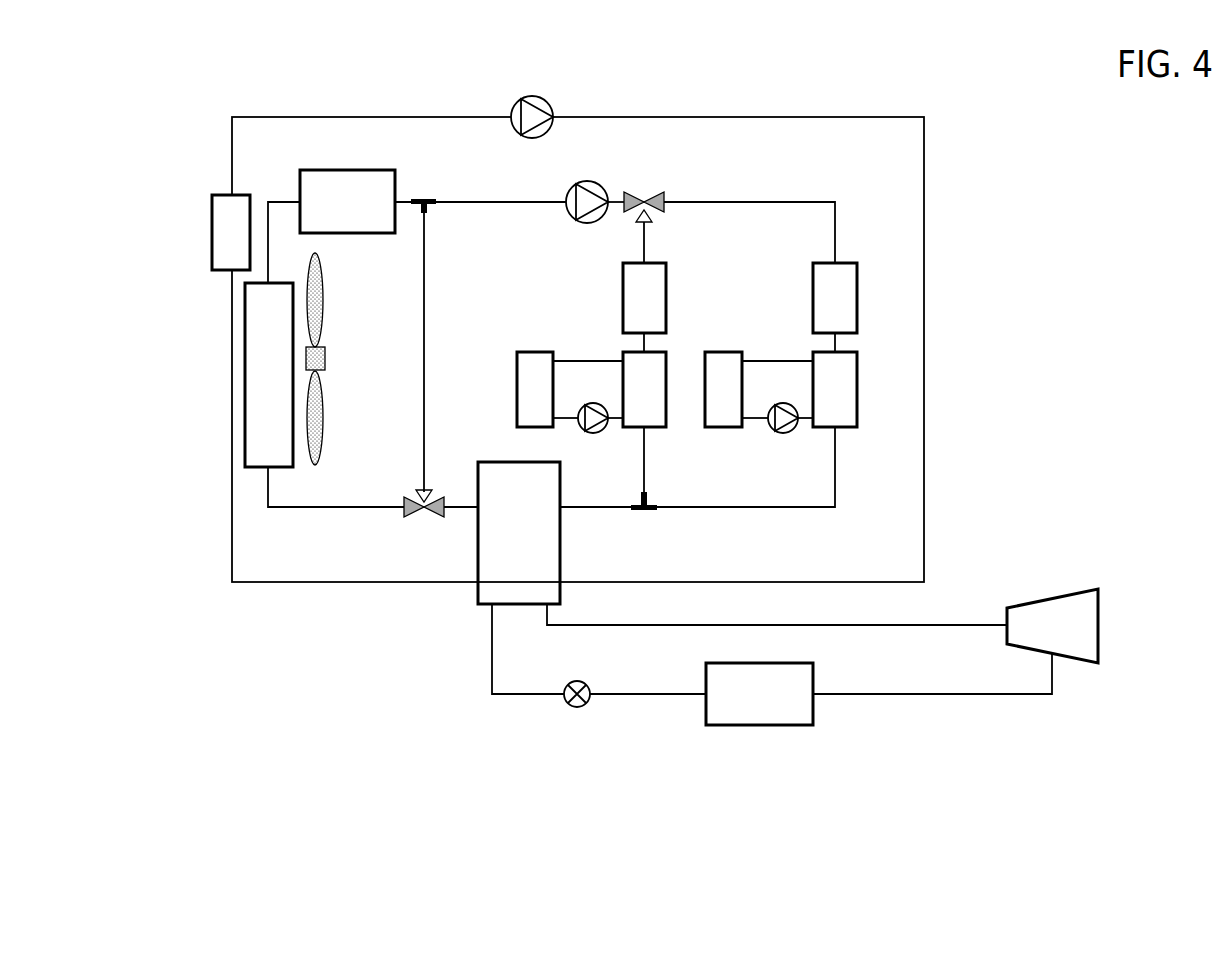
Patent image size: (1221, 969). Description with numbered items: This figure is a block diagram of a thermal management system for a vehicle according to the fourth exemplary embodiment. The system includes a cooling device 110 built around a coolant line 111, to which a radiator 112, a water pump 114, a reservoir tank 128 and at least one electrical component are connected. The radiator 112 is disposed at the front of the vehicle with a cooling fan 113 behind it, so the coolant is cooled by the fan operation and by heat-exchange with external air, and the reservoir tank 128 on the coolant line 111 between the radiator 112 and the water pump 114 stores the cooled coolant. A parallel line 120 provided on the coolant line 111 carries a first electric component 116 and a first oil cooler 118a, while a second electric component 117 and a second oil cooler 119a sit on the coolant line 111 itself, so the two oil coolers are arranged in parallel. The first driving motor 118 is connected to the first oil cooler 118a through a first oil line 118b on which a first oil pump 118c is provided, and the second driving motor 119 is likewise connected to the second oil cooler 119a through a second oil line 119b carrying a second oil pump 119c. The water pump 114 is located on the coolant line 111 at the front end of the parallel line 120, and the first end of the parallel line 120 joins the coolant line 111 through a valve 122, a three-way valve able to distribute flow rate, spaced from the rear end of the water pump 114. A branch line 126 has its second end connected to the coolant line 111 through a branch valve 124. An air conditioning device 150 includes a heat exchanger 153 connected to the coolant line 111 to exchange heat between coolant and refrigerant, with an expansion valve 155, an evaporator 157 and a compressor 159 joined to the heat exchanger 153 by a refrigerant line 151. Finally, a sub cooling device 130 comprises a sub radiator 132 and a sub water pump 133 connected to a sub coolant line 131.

The cooling device 110 is at (818, 186).
The coolant line 111 is at (271, 201).
The radiator 112 is at (294, 465).
The cooling fan 113 is at (325, 299).
The water pump 114 is at (598, 183).
The first electric component 116 is at (667, 299).
The second electric component 117 is at (858, 299).
The first driving motor 118 is at (517, 390).
The first oil cooler 118a is at (657, 428).
The first oil line 118b is at (565, 415).
The first oil pump 118c is at (597, 433).
The second driving motor 119 is at (724, 428).
The second oil cooler 119a is at (858, 390).
The second oil line 119b is at (762, 415).
The second oil pump 119c is at (786, 433).
The parallel line 120 is at (645, 245).
The valve 122 is at (655, 193).
The branch valve 124 is at (422, 518).
The branch line 126 is at (425, 312).
The reservoir tank 128 is at (347, 170).
The sub cooling device 130 is at (880, 108).
The sub coolant line 131 is at (686, 116).
The sub radiator 132 is at (212, 235).
The sub water pump 133 is at (537, 97).
The air conditioning device 150 is at (988, 572).
The refrigerant line 151 is at (492, 658).
The heat exchanger 153 is at (561, 565).
The expansion valve 155 is at (577, 708).
The evaporator 157 is at (760, 726).
The compressor 159 is at (1099, 625).